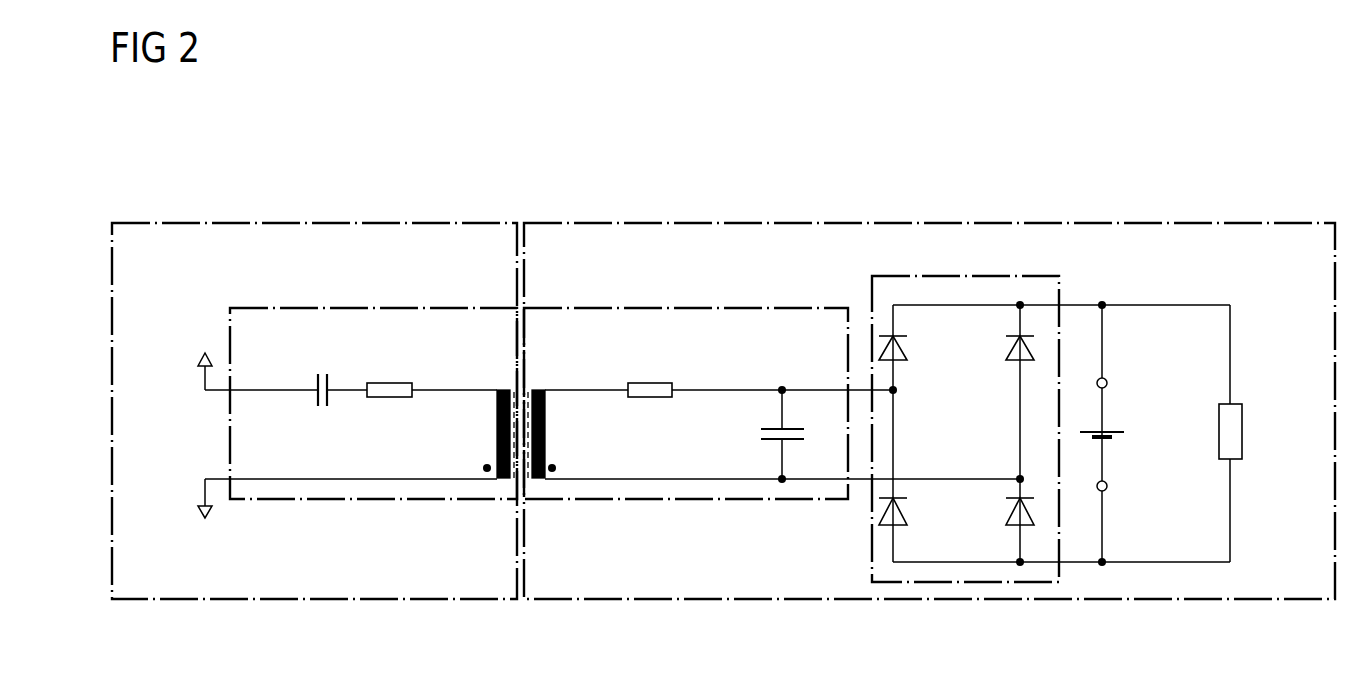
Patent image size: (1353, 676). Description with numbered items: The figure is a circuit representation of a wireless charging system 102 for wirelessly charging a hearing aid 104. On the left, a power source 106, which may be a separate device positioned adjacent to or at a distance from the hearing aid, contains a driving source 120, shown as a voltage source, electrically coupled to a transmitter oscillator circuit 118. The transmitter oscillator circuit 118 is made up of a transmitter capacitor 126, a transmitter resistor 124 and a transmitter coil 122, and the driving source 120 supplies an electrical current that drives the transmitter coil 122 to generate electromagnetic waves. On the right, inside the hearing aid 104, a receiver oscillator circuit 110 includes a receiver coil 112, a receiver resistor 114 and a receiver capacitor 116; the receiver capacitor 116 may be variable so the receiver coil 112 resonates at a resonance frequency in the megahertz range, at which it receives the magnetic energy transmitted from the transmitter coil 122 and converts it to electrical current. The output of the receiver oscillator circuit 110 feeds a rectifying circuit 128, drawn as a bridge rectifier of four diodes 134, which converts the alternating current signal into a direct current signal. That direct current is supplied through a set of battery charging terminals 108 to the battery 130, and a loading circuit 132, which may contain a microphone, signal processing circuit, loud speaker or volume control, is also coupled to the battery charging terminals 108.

The wireless charging system 102 is at (194, 160).
The hearing aid 104 is at (921, 222).
The power source 106 is at (353, 222).
The set of battery charging terminals 108 is at (1107, 383).
The receiver oscillator circuit 110 is at (717, 308).
The receiver coil 112 is at (545, 443).
The receiver resistor 114 is at (653, 383).
The receiver capacitor 116 is at (762, 430).
The transmitter oscillator circuit 118 is at (367, 308).
The driving source 120 is at (202, 390).
The transmitter coil 122 is at (497, 443).
The transmitter resistor 124 is at (391, 383).
The transmitter capacitor 126 is at (316, 382).
The rectifying circuit 128 is at (872, 548).
The battery 130 is at (1126, 432).
The loading circuit 132 is at (1243, 432).
The diodes 134 is at (1005, 347).